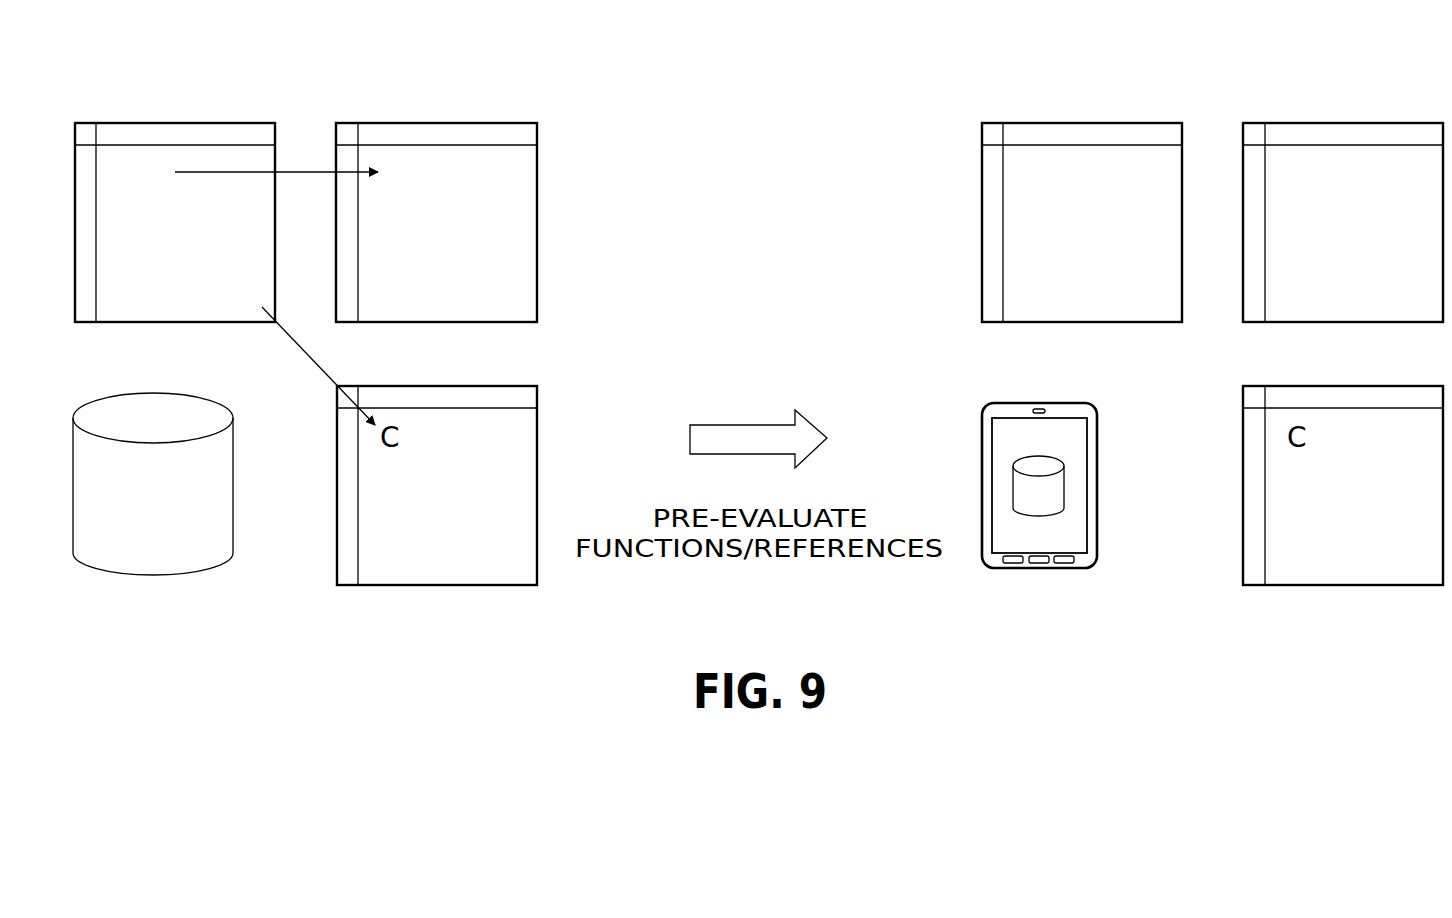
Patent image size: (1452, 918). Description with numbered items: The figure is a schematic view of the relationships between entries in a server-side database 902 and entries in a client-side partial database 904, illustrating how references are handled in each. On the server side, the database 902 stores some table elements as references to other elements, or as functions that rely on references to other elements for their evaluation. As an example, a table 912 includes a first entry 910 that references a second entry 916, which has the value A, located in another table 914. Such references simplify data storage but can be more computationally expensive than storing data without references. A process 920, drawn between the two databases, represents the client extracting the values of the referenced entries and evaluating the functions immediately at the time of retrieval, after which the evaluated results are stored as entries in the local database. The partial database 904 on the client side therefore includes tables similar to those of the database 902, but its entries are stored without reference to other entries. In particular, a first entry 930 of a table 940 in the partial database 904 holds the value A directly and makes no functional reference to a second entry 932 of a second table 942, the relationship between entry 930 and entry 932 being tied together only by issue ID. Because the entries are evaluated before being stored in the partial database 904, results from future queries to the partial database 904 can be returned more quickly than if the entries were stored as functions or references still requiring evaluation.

The server-side database 902 is at (155, 576).
The client-side partial database 904 is at (1065, 487).
The first entry 910 is at (140, 150).
The table 912 is at (195, 123).
The table 914 is at (460, 123).
The second entry 916 is at (390, 150).
The process 920 is at (742, 425).
The first entry 930 is at (1043, 150).
The second entry 932 is at (1297, 150).
The table 940 is at (1100, 123).
The second table 942 is at (1366, 123).